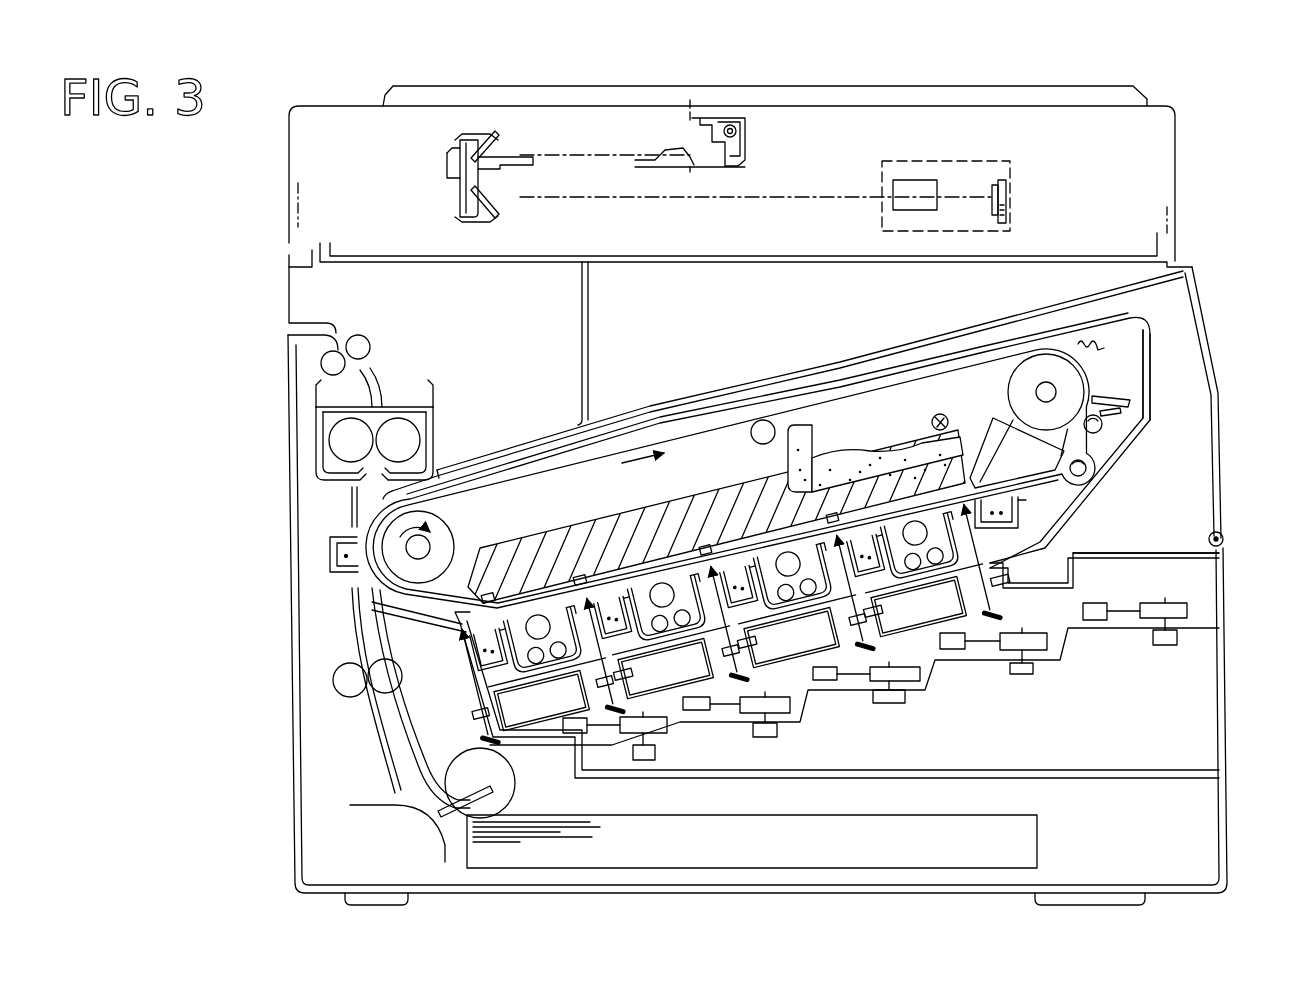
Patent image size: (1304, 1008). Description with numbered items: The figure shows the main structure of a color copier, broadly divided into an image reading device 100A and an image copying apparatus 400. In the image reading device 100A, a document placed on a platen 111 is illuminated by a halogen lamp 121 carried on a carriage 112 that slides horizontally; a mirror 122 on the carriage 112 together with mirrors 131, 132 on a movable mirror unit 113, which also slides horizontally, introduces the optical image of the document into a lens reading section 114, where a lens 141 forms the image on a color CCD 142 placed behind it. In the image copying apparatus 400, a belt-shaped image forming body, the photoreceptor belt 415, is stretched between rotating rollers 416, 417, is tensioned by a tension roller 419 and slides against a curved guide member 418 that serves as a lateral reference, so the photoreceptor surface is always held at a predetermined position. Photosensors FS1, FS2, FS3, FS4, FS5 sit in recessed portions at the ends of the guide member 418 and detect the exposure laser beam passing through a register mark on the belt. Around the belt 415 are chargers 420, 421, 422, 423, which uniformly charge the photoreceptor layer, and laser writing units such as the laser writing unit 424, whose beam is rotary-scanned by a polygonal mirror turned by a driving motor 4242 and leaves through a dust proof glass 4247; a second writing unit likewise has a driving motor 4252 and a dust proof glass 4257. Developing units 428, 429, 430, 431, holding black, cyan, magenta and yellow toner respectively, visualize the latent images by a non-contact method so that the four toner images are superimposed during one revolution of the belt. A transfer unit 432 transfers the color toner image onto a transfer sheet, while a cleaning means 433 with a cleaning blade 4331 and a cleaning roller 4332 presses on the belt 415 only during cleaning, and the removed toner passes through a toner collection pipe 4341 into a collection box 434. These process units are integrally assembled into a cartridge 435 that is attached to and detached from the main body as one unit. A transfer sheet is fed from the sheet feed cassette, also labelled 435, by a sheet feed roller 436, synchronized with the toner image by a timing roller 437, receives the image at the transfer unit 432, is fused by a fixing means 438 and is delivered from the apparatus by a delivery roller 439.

The image reading device 100A is at (345, 128).
The platen 111 is at (818, 86).
The carriage 112 is at (748, 162).
The movable mirror unit 113 is at (460, 205).
The lens reading section 114 is at (889, 161).
The halogen lamp 121 is at (737, 138).
The mirror 122 is at (690, 170).
The mirror 131 is at (497, 158).
The mirror 132 is at (500, 206).
The lens 141 is at (924, 180).
The color CCD 142 is at (997, 182).
The image copying apparatus 400 is at (284, 340).
The photoreceptor belt 415 is at (817, 402).
The rotating roller 416 is at (457, 522).
The rotating roller 417 is at (1037, 368).
The guide member 418 is at (670, 507).
The tension roller 419 is at (757, 422).
The charger 420 is at (1022, 502).
The charger 421 is at (925, 658).
The charger 422 is at (760, 658).
The charger 423 is at (618, 660).
The laser writing unit 424 is at (1093, 596).
The developing unit 428 is at (926, 560).
The developing unit 429 is at (798, 600).
The developing unit 430 is at (672, 630).
The developing unit 431 is at (550, 657).
The transfer unit 432 is at (333, 571).
The cleaning means 433 is at (1140, 377).
The collection box 434 is at (884, 398).
The cartridge 435 is at (1160, 327).
The sheet feed roller 436 is at (458, 768).
The timing roller 437 is at (356, 695).
The fixing means 438 is at (325, 450).
The delivery roller 439 is at (370, 344).
The driving motor 4242 is at (1160, 647).
The dust proof glass 4247 is at (1073, 623).
The driving motor 4252 is at (1018, 676).
The dust proof glass 4257 is at (833, 607).
The cleaning blade 4331 is at (1118, 398).
The cleaning roller 4332 is at (1099, 432).
The toner collection pipe 4341 is at (1093, 455).
The photosensor FS1 is at (968, 415).
The photosensor FS2 is at (830, 512).
The photosensor FS3 is at (712, 545).
The photosensor FS4 is at (578, 578).
The photosensor FS5 is at (487, 594).